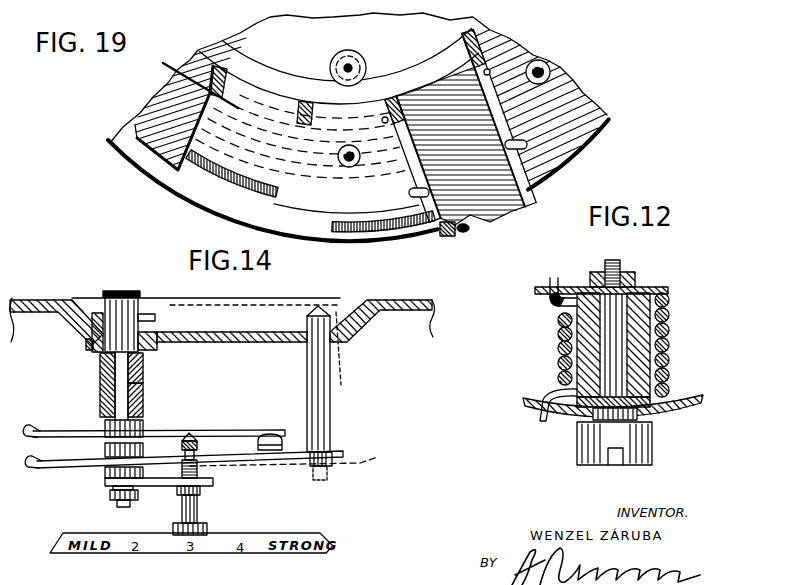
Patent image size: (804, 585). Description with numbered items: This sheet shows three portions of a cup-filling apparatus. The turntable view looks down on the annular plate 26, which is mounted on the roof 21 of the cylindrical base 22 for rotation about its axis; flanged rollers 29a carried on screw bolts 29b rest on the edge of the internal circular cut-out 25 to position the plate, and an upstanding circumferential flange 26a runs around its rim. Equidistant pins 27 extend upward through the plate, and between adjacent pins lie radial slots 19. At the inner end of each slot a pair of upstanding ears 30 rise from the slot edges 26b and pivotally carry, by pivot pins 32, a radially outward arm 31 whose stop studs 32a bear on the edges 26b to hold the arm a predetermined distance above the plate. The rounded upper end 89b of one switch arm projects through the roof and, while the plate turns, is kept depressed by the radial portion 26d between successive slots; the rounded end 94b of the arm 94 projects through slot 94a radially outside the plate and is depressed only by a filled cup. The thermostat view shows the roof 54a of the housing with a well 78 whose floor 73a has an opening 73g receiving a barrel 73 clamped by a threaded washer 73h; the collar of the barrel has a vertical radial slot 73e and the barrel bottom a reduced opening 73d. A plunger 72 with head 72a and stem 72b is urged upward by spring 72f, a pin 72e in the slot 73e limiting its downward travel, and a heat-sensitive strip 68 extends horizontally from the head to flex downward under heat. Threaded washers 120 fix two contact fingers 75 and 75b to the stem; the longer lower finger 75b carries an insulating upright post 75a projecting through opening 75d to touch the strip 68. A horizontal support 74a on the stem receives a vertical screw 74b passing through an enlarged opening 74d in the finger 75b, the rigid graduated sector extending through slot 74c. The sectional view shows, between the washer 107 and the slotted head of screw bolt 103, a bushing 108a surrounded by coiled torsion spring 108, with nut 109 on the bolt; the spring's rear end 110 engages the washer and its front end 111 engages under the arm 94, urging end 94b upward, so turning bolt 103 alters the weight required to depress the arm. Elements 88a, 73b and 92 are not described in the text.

In FIG. 19, the radial slot 19 is at (195, 79).
In FIG. 19, the roof 21 is at (143, 108).
In FIG. 19, the cylindrical base 22 is at (107, 150).
In FIG. 19, the internal circular cut-out 25 is at (283, 68).
In FIG. 19, the annular plate 26 is at (255, 63).
In FIG. 19, the upstanding circumferential flange 26a is at (163, 160).
In FIG. 19, the slot edges 26b is at (297, 147).
In FIG. 19, the radial portion 26d is at (352, 124).
In FIG. 19, the pin 27 is at (349, 168).
In FIG. 19, the flanged roller 29a is at (346, 63).
In FIG. 19, the screw bolt 29b is at (353, 62).
In FIG. 19, the upstanding ears 30 is at (296, 113).
In FIG. 19, the arm 31 is at (513, 210).
In FIG. 19, the pivot pin 32 is at (489, 70).
In FIG. 19, the stop stud 32a is at (428, 190).
In FIG. 19, the scale slot 88a is at (210, 173).
In FIG. 19, the upper end of switch arm 89b is at (233, 175).
In FIG. 19, the slot 94a is at (380, 234).
In FIG. 19, the upper end of arm 94b is at (393, 238).
In FIG. 19, the screw bolt 103 is at (447, 237).
In FIG. 12, the screw bolt 103 is at (653, 444).
In FIG. 14, the roof of housing 54a is at (33, 299).
In FIG. 14, the well or depression 78 is at (80, 299).
In FIG. 14, the heat-sensitive strip 68 is at (304, 296).
In FIG. 14, the plunger 72 is at (135, 287).
In FIG. 14, the plunger head 72a is at (118, 291).
In FIG. 14, the stem 72b is at (142, 398).
In FIG. 14, the pin 72e is at (167, 298).
In FIG. 14, the spring 72f is at (140, 386).
In FIG. 14, the barrel 73 is at (100, 374).
In FIG. 14, the floor 73a is at (156, 327).
In FIG. 14, the bushing 73b is at (144, 412).
In FIG. 14, the reduced opening 73d is at (104, 411).
In FIG. 14, the vertical radial slot 73e is at (85, 320).
In FIG. 14, the opening 73g is at (148, 313).
In FIG. 14, the threaded washer 73h is at (87, 345).
In FIG. 14, the horizontal support 74a is at (163, 486).
In FIG. 14, the vertical screw 74b is at (200, 511).
In FIG. 14, the slot 74c is at (205, 489).
In FIG. 14, the enlarged opening 74d is at (207, 446).
In FIG. 14, the upper contact finger 75 is at (232, 431).
In FIG. 14, the upright post 75a is at (333, 365).
In FIG. 14, the lower contact finger 75b is at (296, 456).
In FIG. 14, the opening 75d is at (307, 340).
In FIG. 14, the threaded washers 120 is at (105, 455).
In FIG. 12, the washer 107 is at (668, 287).
In FIG. 12, the coiled torsion spring 108 is at (669, 326).
In FIG. 12, the bushing 108a is at (643, 284).
In FIG. 12, the nut 109 is at (595, 271).
In FIG. 12, the rear end of spring 110 is at (555, 277).
In FIG. 12, the front end of spring 111 is at (541, 423).
In FIG. 12, the curved plate 92 is at (668, 395).
In FIG. 12, the arm 94 is at (524, 404).